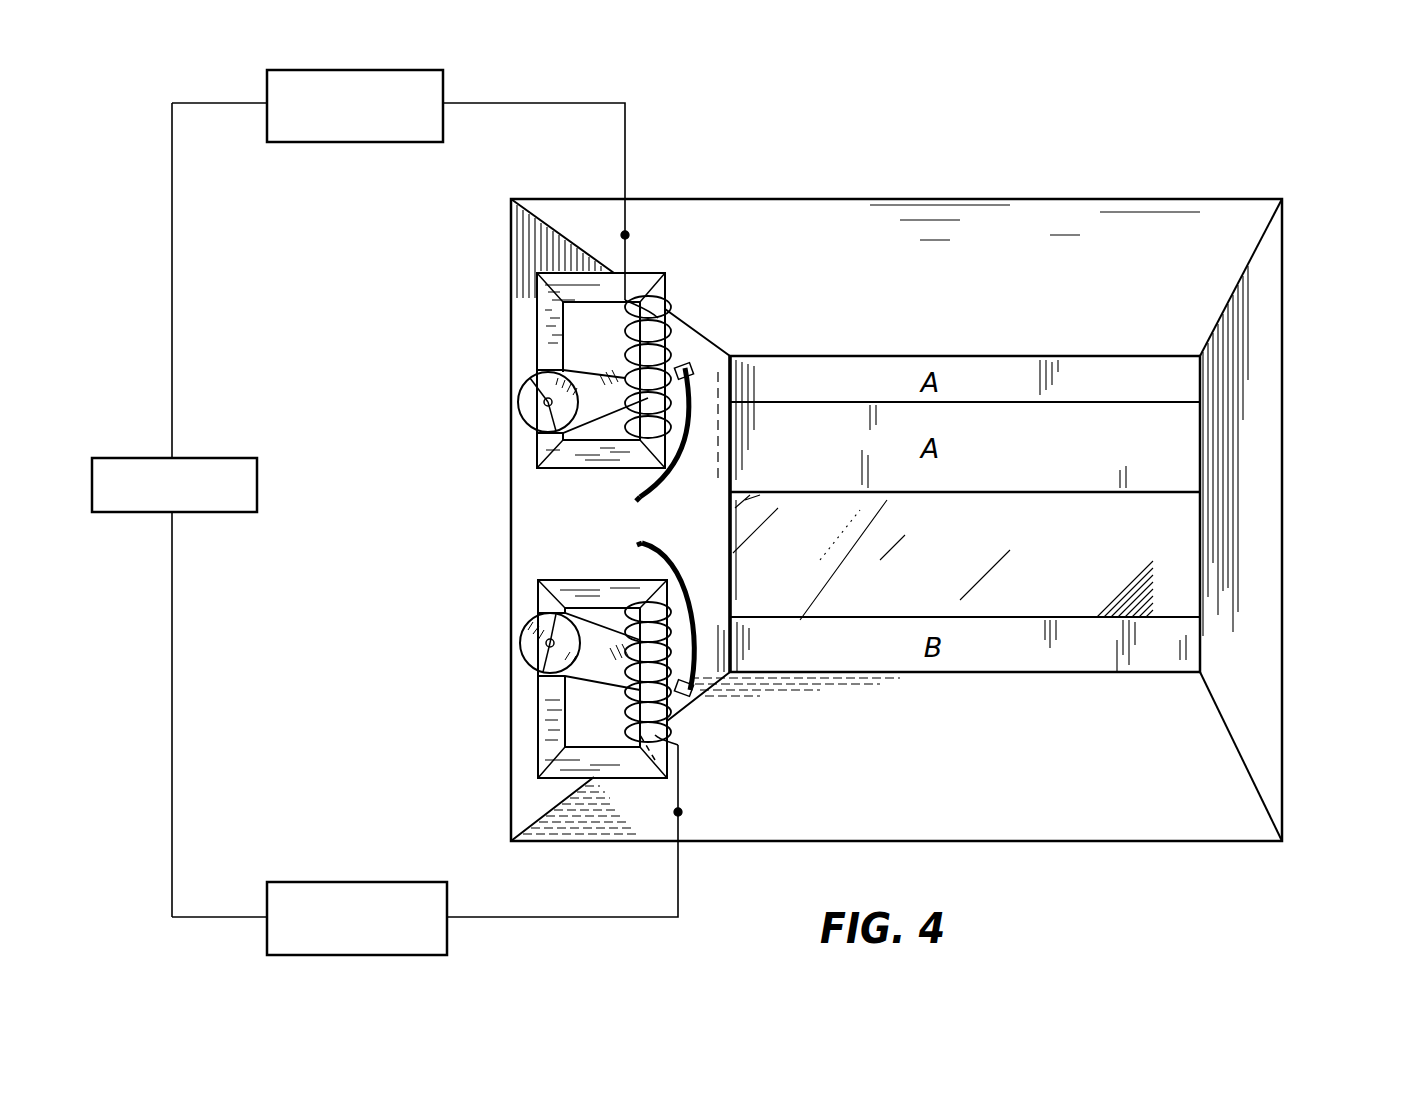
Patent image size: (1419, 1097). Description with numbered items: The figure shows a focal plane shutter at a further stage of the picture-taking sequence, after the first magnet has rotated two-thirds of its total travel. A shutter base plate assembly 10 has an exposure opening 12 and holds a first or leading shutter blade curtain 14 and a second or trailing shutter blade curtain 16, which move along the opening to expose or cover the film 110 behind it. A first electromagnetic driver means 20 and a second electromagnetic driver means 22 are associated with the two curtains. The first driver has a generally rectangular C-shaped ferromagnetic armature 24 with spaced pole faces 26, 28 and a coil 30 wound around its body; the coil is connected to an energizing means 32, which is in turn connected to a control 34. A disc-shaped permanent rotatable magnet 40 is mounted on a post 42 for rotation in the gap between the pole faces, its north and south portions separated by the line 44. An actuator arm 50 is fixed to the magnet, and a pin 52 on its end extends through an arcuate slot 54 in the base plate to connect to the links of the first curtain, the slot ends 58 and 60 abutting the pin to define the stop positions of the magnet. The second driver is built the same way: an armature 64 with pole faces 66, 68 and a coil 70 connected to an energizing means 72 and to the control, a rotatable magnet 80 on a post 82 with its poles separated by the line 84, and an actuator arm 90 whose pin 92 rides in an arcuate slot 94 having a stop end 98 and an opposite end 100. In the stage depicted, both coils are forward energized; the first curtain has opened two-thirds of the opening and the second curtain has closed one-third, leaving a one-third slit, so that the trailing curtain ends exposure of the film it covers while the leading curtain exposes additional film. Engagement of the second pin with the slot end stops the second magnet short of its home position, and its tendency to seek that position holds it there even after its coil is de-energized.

The shutter base plate assembly 10 is at (1168, 199).
The exposure opening 12 is at (1005, 356).
The first shutter blade curtain 14 is at (1178, 457).
The second shutter blade curtain 16 is at (1178, 650).
The film 110 is at (1185, 552).
The first electromagnetic driver means 20 is at (488, 375).
The second electromagnetic driver means 22 is at (475, 626).
The armature 24 is at (577, 272).
The pole face 26 is at (530, 432).
The pole face 28 is at (540, 372).
The coil 30 is at (625, 352).
The energizing means 32 is at (358, 142).
The control 34 is at (143, 458).
The rotatable magnet 40 is at (522, 382).
The post 42 is at (545, 400).
The line 44 is at (545, 418).
The actuator arm 50 is at (560, 450).
The pin 52 is at (690, 385).
The slot 54 is at (690, 440).
The slot end 58 is at (637, 501).
The slot end 60 is at (648, 318).
The armature 64 is at (612, 778).
The pole face 66 is at (535, 672).
The pole face 68 is at (538, 612).
The coil 70 is at (597, 779).
The energizing means 72 is at (357, 882).
The rotatable magnet 80 is at (530, 672).
The post 82 is at (530, 666).
The line 84 is at (535, 668).
The actuator arm 90 is at (602, 672).
The pin 92 is at (695, 688).
The slot 94 is at (698, 615).
The slot end 98 is at (638, 780).
The slot end 100 is at (638, 544).